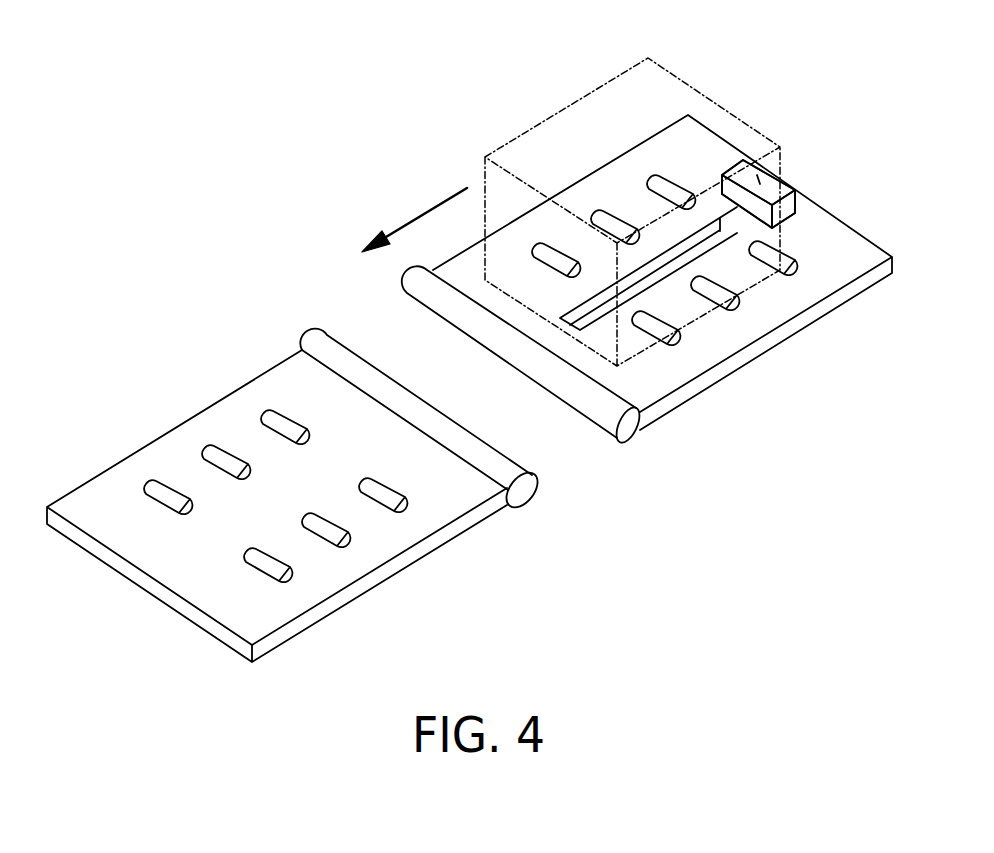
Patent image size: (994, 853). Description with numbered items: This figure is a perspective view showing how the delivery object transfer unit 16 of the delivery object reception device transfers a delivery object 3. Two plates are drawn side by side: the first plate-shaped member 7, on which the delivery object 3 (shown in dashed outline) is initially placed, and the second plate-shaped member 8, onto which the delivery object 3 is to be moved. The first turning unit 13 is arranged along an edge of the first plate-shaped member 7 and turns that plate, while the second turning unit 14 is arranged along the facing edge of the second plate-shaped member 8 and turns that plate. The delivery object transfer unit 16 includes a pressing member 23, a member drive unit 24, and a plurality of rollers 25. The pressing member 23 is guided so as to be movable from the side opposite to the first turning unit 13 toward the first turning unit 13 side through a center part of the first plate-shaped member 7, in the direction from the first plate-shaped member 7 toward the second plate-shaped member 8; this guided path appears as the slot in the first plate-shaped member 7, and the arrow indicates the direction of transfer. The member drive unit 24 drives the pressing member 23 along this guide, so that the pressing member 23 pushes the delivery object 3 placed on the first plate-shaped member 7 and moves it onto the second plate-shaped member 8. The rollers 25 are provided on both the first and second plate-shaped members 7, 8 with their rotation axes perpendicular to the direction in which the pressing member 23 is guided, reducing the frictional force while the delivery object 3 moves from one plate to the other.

The delivery object 3 is at (568, 100).
The first plate-shaped member 7 is at (745, 363).
The second plate-shaped member 8 is at (410, 570).
The first turning unit 13 is at (637, 418).
The second turning unit 14 is at (527, 487).
The delivery object transfer unit 16 is at (811, 72).
The pressing member 23 is at (777, 160).
The member drive unit 24 is at (757, 175).
The rollers 25 is at (167, 477).